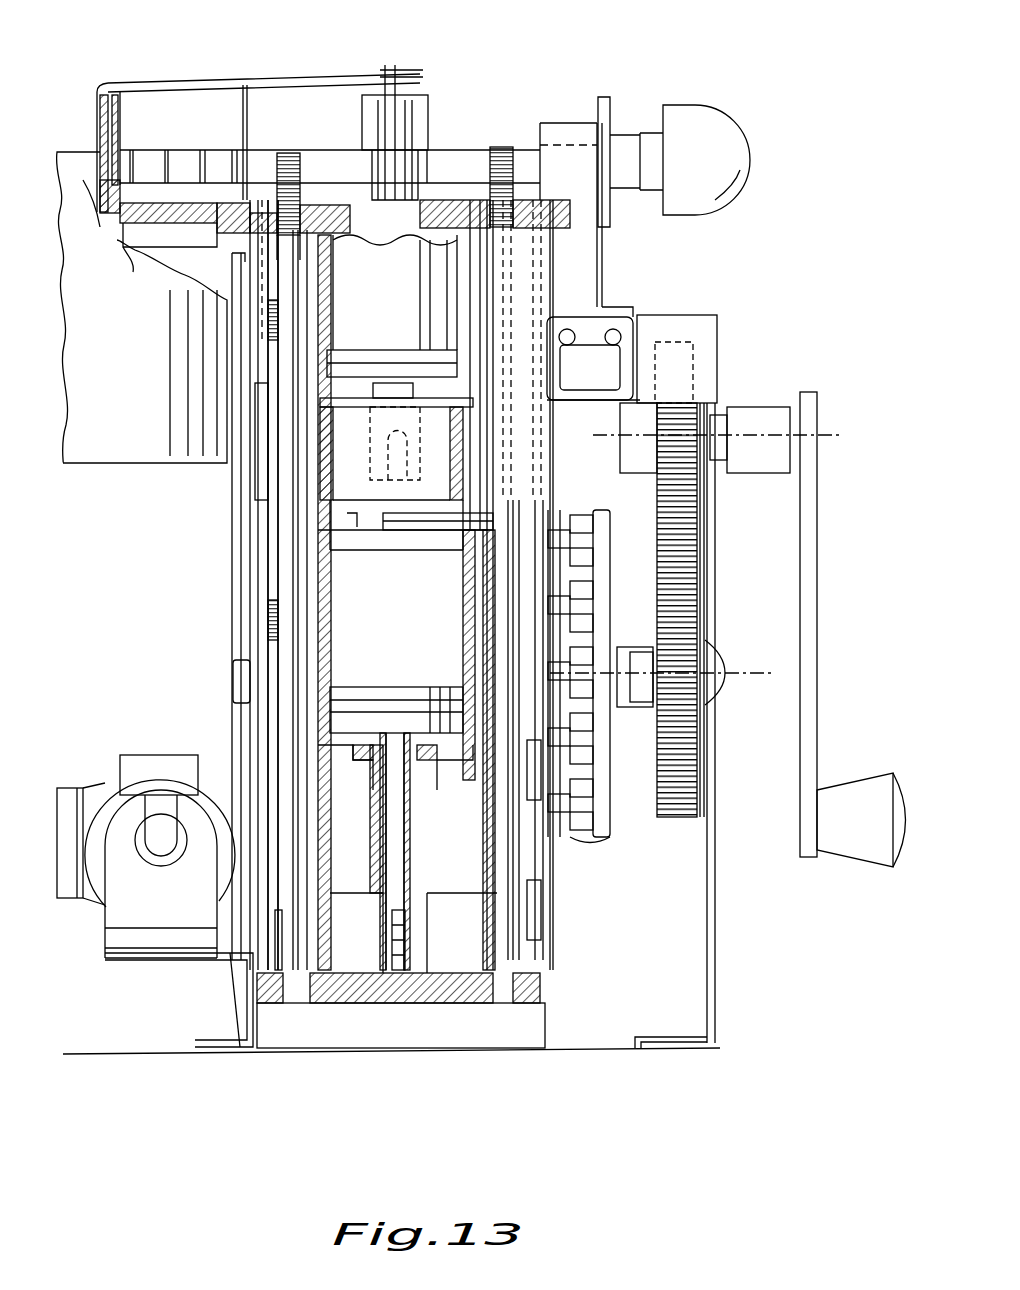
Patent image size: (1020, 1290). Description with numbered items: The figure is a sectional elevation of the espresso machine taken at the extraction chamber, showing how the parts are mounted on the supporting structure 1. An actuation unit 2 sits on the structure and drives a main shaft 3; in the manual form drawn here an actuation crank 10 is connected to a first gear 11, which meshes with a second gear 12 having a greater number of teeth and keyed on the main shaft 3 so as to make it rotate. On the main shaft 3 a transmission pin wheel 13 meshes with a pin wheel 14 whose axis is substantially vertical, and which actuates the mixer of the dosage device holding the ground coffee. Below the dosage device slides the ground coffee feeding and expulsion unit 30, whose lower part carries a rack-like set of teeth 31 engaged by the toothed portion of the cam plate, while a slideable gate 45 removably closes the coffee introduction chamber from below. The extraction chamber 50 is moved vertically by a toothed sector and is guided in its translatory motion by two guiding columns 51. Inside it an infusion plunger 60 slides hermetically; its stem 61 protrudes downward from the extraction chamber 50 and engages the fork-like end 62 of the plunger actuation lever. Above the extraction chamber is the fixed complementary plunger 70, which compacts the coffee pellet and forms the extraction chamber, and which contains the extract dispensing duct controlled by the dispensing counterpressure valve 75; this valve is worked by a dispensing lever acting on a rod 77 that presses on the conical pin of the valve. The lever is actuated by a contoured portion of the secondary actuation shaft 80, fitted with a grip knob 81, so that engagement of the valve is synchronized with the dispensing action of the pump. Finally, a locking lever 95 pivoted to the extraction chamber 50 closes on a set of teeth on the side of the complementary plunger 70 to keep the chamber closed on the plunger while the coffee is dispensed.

The supporting structure 1 is at (732, 924).
The actuation unit 2 is at (766, 350).
The main shaft 3 is at (560, 667).
The actuation crank 10 is at (810, 657).
The first gear 11 is at (697, 490).
The second gear 12 is at (682, 773).
The transmission pin wheel 13 is at (583, 840).
The pin wheel 14 is at (557, 527).
The ground coffee feeding and expulsion unit 30 is at (330, 453).
The rack-like set of teeth 31 is at (313, 525).
The gate 45 is at (313, 535).
The extraction chamber 50 is at (320, 682).
The guiding columns 51 is at (290, 625).
The infusion plunger 60 is at (400, 710).
The stem 61 is at (400, 843).
The fork-like end 62 is at (397, 940).
The fixed complementary plunger 70 is at (327, 365).
The dispensing counterpressure valve 75 is at (360, 135).
The rod 77 is at (290, 75).
The secondary actuation shaft 80 is at (455, 150).
The grip knob 81 is at (688, 112).
The locking lever 95 is at (277, 870).